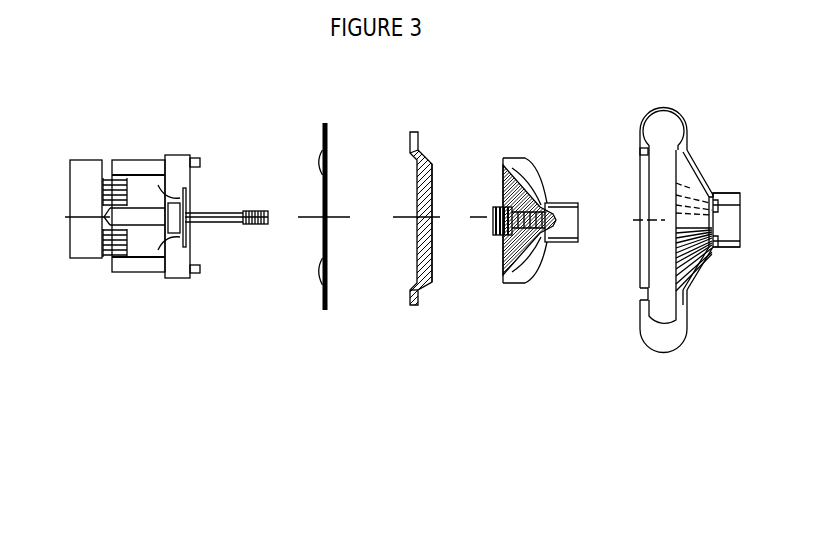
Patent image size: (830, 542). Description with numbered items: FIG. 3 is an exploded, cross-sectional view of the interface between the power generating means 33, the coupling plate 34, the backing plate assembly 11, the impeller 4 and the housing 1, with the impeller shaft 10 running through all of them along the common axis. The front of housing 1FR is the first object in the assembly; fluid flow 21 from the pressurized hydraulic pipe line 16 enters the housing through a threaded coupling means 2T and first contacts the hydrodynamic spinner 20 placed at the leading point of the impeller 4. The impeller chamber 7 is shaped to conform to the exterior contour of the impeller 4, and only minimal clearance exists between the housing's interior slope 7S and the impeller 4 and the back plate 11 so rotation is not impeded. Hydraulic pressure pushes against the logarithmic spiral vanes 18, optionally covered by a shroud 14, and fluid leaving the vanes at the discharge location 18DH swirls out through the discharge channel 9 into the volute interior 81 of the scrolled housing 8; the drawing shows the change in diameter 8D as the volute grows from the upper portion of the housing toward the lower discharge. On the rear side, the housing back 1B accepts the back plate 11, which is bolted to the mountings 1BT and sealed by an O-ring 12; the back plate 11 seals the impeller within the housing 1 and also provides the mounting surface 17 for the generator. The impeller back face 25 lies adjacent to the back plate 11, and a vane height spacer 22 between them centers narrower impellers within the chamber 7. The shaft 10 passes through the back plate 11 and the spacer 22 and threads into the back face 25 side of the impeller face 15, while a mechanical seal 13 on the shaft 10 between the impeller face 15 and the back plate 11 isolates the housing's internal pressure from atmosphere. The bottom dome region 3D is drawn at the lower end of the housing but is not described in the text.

The power generating means 33 is at (135, 210).
The impeller shaft 10 is at (238, 212).
The coupling plate 34 is at (325, 207).
The backing plate assembly 11 is at (418, 215).
The O-ring 12 is at (418, 156).
The vane height spacer 22 is at (432, 175).
The mounting surface 17 is at (410, 287).
The impeller 4 is at (539, 222).
The impeller face 15 is at (502, 178).
The vanes 18 is at (527, 163).
The shroud cover 14 is at (538, 183).
The mechanical seal 13 is at (500, 237).
The impeller back face 25 is at (503, 268).
The discharge location 18DH is at (513, 285).
The spinner 20 is at (580, 232).
The housing 1 is at (707, 231).
The change in diameter 8D is at (685, 126).
The discharge channel 9 is at (660, 151).
The mountings 1BT is at (641, 150).
The housing back 1B is at (640, 292).
The impeller chamber 7 is at (687, 185).
The front of housing 1FR is at (700, 184).
The pressurized hydraulic pipe line 16 is at (735, 212).
The fluid flow 21 is at (792, 227).
The coupling means 2T is at (741, 246).
The interior slope 7S is at (700, 266).
The volute interior 81 is at (690, 306).
The scrolled housing 8 is at (662, 337).
The bottom dome inner 3D is at (683, 325).